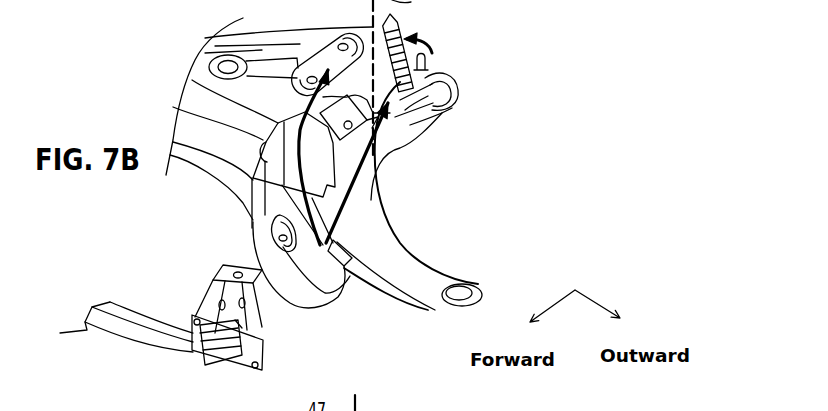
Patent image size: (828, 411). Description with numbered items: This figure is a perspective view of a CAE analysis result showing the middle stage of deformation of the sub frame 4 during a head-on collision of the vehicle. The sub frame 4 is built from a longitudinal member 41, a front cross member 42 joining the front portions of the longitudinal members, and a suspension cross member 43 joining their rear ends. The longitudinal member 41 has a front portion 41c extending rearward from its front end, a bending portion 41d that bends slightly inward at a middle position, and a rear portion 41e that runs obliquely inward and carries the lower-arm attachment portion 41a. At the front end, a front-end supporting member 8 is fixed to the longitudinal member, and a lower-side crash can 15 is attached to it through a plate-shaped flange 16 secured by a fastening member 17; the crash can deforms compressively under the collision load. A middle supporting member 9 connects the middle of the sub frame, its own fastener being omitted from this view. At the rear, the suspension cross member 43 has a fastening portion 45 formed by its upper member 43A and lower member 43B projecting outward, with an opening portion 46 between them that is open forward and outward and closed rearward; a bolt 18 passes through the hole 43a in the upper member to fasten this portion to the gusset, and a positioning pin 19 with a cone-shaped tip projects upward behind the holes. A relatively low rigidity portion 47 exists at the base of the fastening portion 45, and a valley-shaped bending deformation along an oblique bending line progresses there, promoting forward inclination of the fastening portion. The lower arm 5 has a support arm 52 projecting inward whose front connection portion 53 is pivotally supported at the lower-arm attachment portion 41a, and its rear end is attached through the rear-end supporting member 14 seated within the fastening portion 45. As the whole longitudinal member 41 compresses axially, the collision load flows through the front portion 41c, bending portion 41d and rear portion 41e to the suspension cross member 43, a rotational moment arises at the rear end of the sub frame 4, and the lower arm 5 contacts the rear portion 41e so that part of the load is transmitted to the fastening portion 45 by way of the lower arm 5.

The sub frame 4 is at (173, 230).
The lower arm 5 is at (406, 236).
The front-end supporting member 8 is at (192, 302).
The middle supporting member 9 is at (260, 152).
The rear-end supporting member 14 is at (442, 113).
The lower-side crash can 15 is at (207, 367).
The flange 16 is at (260, 353).
The fastening member 17 is at (194, 320).
The bolt 18 is at (396, 28).
The positioning pin 19 is at (427, 62).
The longitudinal member 41 is at (339, 327).
The lower-arm attachment portion 41a is at (270, 218).
The front portion 41c is at (294, 326).
The bending portion 41d is at (344, 292).
The rear portion 41e is at (234, 216).
The front cross member 42 is at (122, 330).
The suspension cross member 43 is at (192, 168).
The upper member 43A is at (452, 78).
The lower member 43B is at (455, 97).
The hole 43a is at (397, 125).
The fastening portion 45 is at (455, 116).
The opening portion 46 is at (395, 133).
The low rigidity portion 47 is at (346, 75).
The support arm 52 is at (342, 241).
The front connection portion 53 is at (273, 242).